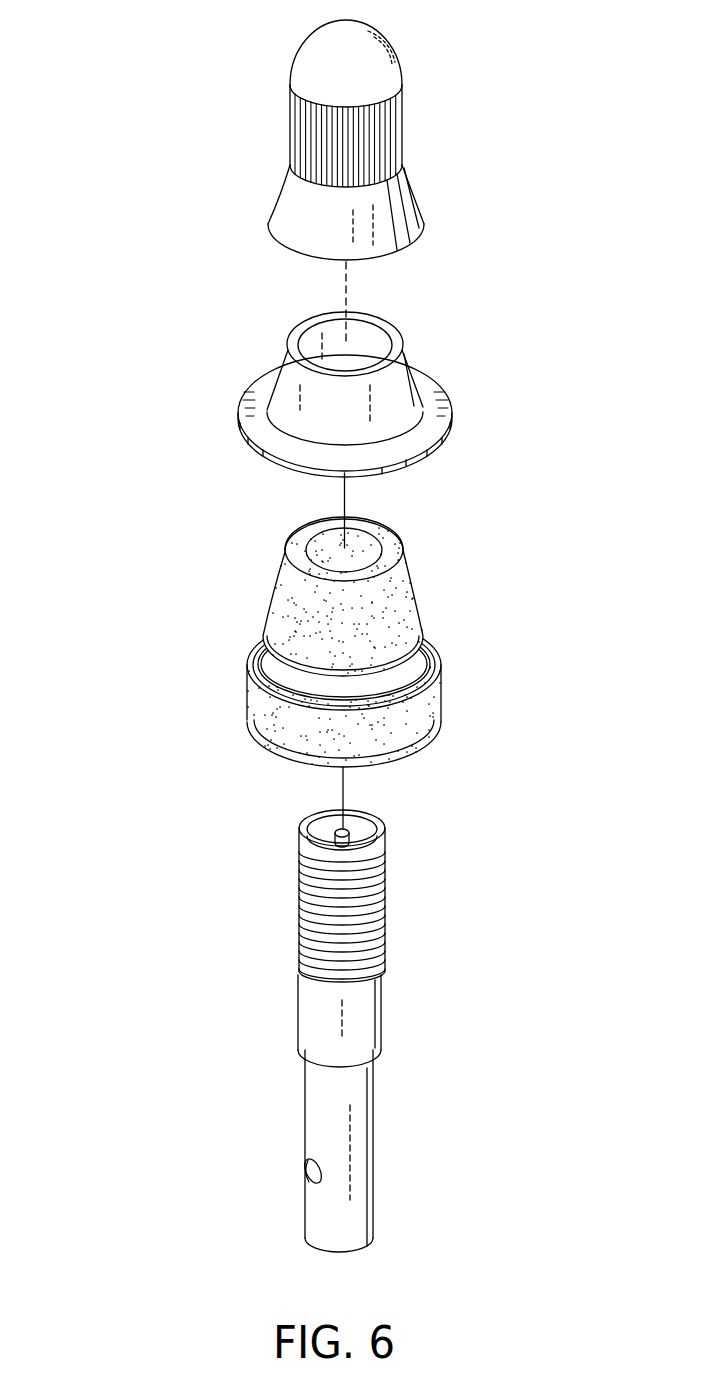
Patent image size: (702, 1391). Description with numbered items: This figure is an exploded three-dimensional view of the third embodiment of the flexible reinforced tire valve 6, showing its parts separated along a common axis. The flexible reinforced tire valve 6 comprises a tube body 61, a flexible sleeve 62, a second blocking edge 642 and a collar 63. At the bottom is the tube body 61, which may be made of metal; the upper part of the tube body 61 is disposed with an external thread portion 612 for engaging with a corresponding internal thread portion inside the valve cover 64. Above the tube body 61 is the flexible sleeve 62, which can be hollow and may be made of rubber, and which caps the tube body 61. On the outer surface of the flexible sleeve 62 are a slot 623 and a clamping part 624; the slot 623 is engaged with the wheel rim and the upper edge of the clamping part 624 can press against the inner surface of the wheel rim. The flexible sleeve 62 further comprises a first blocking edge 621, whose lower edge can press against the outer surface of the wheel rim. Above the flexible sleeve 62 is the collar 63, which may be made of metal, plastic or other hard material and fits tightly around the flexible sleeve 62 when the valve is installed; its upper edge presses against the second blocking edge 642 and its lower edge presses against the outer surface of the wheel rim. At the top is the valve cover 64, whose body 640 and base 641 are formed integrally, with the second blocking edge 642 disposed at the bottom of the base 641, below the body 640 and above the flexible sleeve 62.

The flexible reinforced tire valve 6 is at (150, 450).
The tube body 61 is at (403, 988).
The external thread portion 612 is at (372, 890).
The flexible sleeve 62 is at (213, 633).
The first blocking edge 621 is at (277, 656).
The slot 623 is at (282, 673).
The clamping part 624 is at (277, 717).
The collar 63 is at (443, 360).
The valve cover 64 is at (437, 133).
The body 640 is at (302, 117).
The base 641 is at (287, 202).
The second blocking edge 642 is at (297, 257).